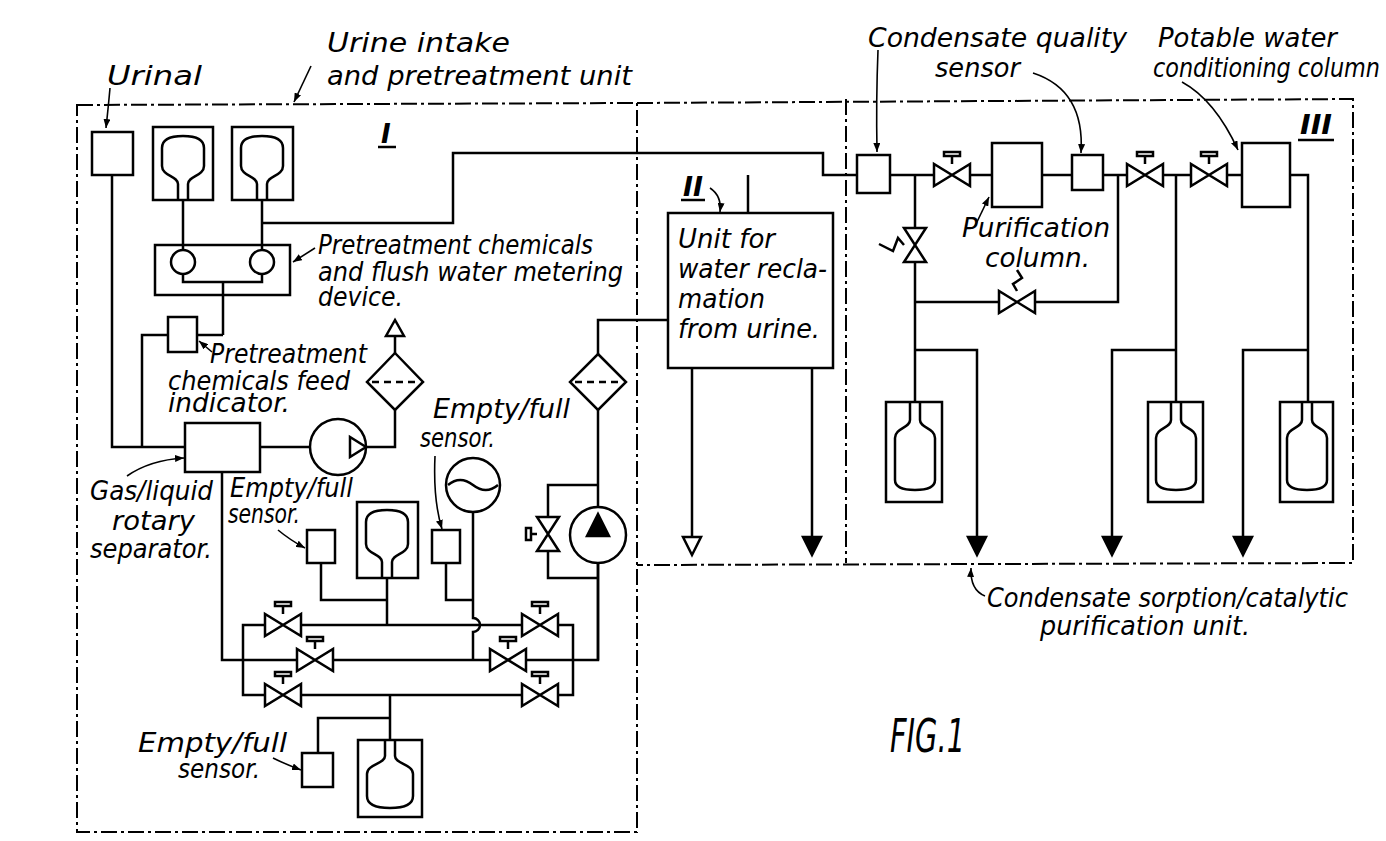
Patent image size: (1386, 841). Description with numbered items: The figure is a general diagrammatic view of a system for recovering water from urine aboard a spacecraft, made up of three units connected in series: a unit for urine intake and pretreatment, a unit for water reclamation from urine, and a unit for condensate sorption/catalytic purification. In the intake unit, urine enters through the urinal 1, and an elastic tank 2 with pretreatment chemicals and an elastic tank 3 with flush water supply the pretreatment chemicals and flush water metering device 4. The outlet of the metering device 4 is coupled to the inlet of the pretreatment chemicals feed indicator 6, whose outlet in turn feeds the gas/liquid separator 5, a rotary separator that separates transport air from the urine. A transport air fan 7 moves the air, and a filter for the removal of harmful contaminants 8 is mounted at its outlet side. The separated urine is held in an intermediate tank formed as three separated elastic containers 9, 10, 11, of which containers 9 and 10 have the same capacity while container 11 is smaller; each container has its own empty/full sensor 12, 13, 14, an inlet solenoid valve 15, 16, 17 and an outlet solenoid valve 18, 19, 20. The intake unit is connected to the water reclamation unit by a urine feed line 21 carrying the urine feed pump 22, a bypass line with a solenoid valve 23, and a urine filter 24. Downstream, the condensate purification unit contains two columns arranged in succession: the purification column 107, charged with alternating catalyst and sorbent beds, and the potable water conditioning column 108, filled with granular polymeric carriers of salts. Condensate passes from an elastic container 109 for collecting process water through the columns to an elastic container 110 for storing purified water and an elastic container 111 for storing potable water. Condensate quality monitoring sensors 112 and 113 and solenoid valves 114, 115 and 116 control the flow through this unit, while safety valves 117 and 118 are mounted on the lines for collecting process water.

The urinal 1 is at (112, 153).
The elastic tank with pretreatment chemicals 2 is at (158, 204).
The elastic tank with flush water 3 is at (295, 165).
The pretreatment chemicals and flush water metering device 4 is at (220, 255).
The gas/liquid separator 5 is at (222, 447).
The pretreatment chemicals feed indicator 6 is at (182, 334).
The transport air fan 7 is at (343, 434).
The filter for the removal of harmful contaminants 8 is at (410, 373).
The elastic container 9 is at (392, 502).
The elastic container 10 is at (424, 782).
The elastic container 11 is at (498, 478).
The empty/full sensor 12 is at (321, 546).
The empty/full sensor 13 is at (317, 770).
The empty/full sensor 14 is at (446, 546).
The inlet solenoid valve 15 is at (268, 612).
The inlet solenoid valve 16 is at (266, 702).
The inlet solenoid valve 17 is at (335, 660).
The outlet solenoid valve 18 is at (527, 612).
The outlet solenoid valve 19 is at (547, 708).
The outlet solenoid valve 20 is at (490, 665).
The urine feed line 21 is at (600, 640).
The urine feed pump 22 is at (614, 513).
The solenoid valve 23 is at (532, 540).
The urine filter 24 is at (590, 366).
The purification column 107 is at (1017, 175).
The potable water conditioning column 108 is at (1266, 175).
The elastic container for collecting process water 109 is at (915, 502).
The elastic container for storing purified water 110 is at (1178, 502).
The elastic container for storing potable water 111 is at (1307, 502).
The condensate quality monitoring sensor 112 is at (863, 121).
The condensate quality monitoring sensor 113 is at (1098, 156).
The solenoid valve 114 is at (936, 167).
The solenoid valve 115 is at (1152, 192).
The solenoid valve 116 is at (1216, 192).
The safety valve 117 is at (908, 264).
The safety valve 118 is at (1026, 316).